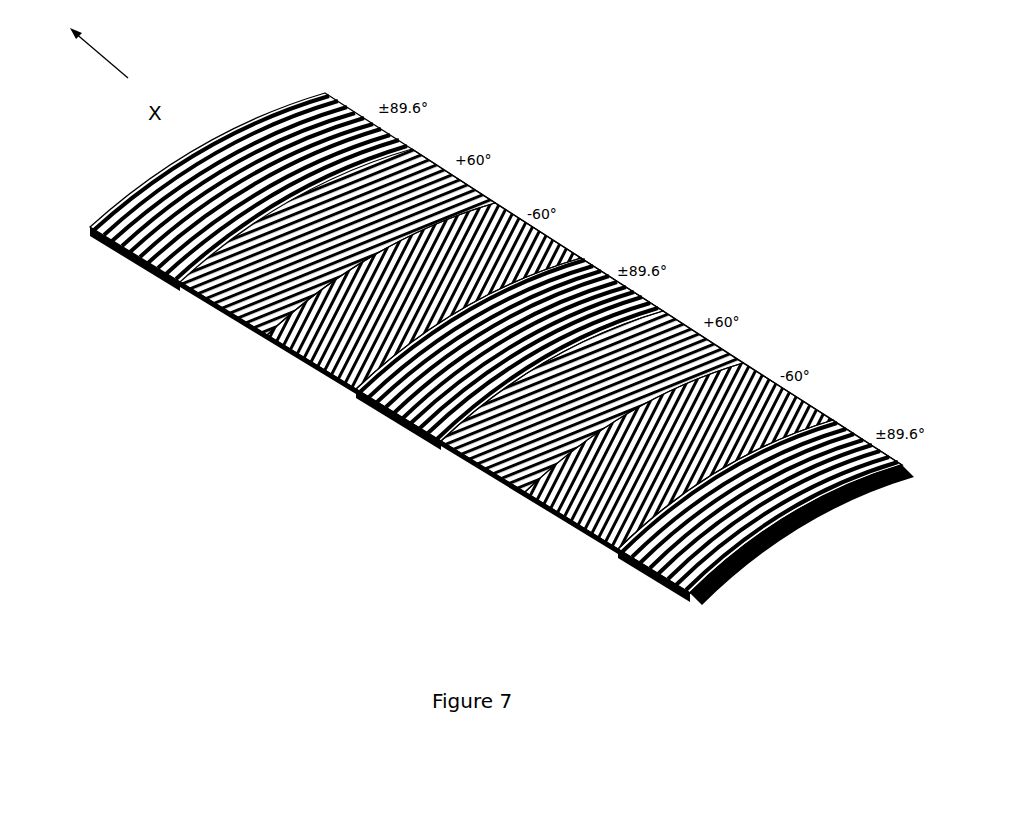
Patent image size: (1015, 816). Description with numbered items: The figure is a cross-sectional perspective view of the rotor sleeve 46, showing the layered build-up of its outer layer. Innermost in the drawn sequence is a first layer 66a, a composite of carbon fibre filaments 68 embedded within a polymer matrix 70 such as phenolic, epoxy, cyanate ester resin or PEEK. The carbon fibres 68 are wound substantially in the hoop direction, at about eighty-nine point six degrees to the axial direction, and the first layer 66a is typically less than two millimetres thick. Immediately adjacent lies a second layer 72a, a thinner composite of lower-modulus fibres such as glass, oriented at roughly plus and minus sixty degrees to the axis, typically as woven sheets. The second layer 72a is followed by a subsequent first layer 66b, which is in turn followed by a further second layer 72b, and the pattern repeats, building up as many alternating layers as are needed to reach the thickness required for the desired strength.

The composite laminate structure 46 is at (723, 196).
The first layer 66a is at (633, 567).
The subsequent first layer 66b is at (388, 413).
The carbon fibre filaments 68 is at (917, 470).
The polymer matrix 70 is at (903, 465).
The second layer 72a is at (512, 483).
The further second layer 72b is at (200, 308).